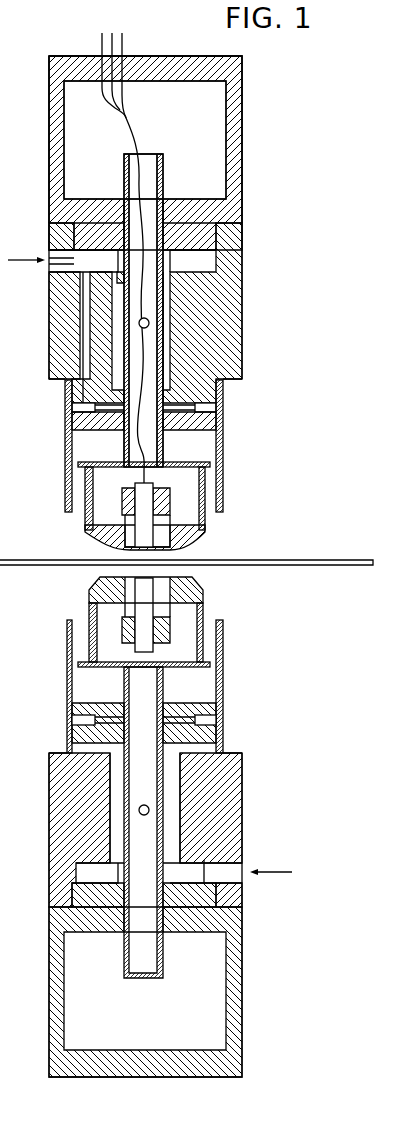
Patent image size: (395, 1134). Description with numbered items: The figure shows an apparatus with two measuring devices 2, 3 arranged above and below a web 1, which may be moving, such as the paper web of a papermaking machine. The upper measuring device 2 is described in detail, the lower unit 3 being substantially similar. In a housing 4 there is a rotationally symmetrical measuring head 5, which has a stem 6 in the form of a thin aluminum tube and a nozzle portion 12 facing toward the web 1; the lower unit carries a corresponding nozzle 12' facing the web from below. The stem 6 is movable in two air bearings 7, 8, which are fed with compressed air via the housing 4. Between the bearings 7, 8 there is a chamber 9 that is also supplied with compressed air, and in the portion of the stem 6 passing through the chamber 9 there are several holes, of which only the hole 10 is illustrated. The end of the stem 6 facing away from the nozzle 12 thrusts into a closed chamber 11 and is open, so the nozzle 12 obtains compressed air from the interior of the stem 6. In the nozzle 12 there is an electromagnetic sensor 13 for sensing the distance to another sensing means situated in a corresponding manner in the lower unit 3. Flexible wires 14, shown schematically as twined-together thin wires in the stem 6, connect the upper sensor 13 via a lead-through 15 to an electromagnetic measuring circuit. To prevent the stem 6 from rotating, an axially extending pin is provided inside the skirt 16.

The web 1 is at (305, 560).
The upper measuring device 2 is at (265, 210).
The lower measuring device 3 is at (250, 769).
The housing 4 is at (242, 190).
The measuring head 5 is at (205, 527).
The stem 6 is at (163, 160).
The air bearing 7 is at (76, 274).
The air bearing 8 is at (110, 422).
The chamber 9 is at (170, 298).
The hole 10 is at (150, 324).
The closed chamber 11 is at (186, 113).
The nozzle portion 12 is at (157, 539).
The nozzle portion of lower unit 12' is at (129, 620).
The electromagnetic sensor 13 is at (150, 496).
The flexible wires 14 is at (125, 118).
The lead-through 15 is at (100, 42).
The skirt 16 is at (67, 458).